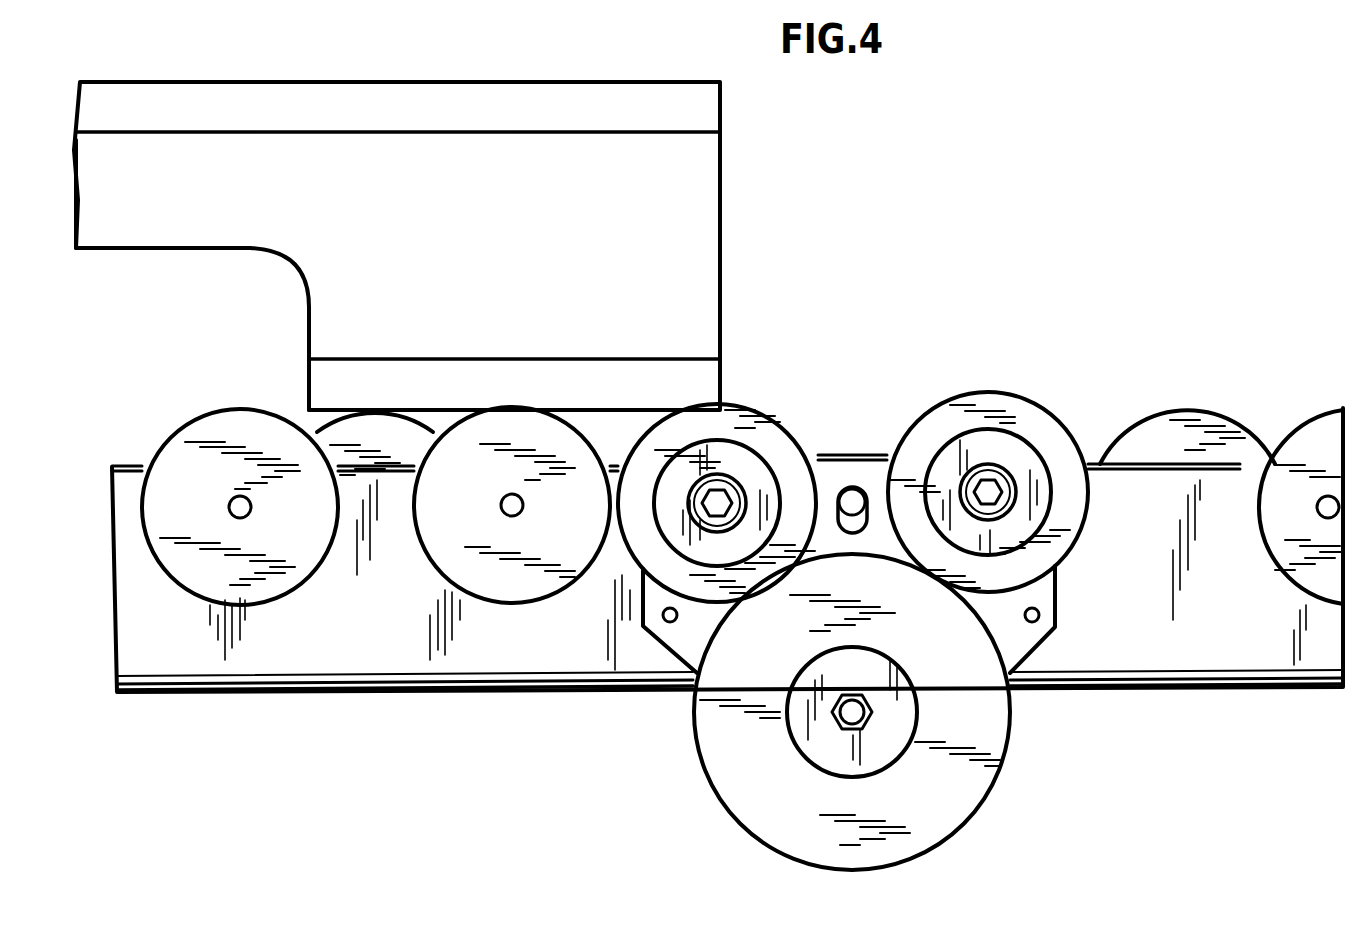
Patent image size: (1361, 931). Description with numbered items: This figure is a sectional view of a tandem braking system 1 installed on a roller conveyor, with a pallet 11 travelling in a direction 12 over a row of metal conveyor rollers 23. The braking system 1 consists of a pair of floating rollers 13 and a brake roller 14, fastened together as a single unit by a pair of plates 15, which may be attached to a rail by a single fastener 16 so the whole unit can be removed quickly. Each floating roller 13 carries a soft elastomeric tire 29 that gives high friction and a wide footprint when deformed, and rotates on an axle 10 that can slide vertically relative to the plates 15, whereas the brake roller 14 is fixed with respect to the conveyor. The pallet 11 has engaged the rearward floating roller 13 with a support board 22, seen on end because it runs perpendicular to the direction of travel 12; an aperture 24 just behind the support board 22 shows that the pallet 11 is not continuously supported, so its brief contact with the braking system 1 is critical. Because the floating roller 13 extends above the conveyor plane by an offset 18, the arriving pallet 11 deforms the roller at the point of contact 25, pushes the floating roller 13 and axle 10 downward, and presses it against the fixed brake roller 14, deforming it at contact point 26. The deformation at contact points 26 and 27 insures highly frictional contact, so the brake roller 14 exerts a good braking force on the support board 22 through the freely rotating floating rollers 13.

The tandem braking system 1 is at (1131, 271).
The axle 10 is at (990, 487).
The pallet 11 is at (581, 80).
The direction of travel 12 is at (918, 181).
The floating roller 13 is at (637, 442).
The brake roller 14 is at (1012, 733).
The plate 15 is at (1057, 590).
The fastener 16 is at (865, 503).
The offset 18 is at (1113, 400).
The support board 22 is at (309, 388).
The conveyor roller 23 is at (172, 437).
The aperture 24 is at (205, 323).
The point of contact 25 is at (754, 391).
The contact point 26 is at (780, 601).
The contact point 27 is at (903, 585).
The tire 29 is at (650, 565).